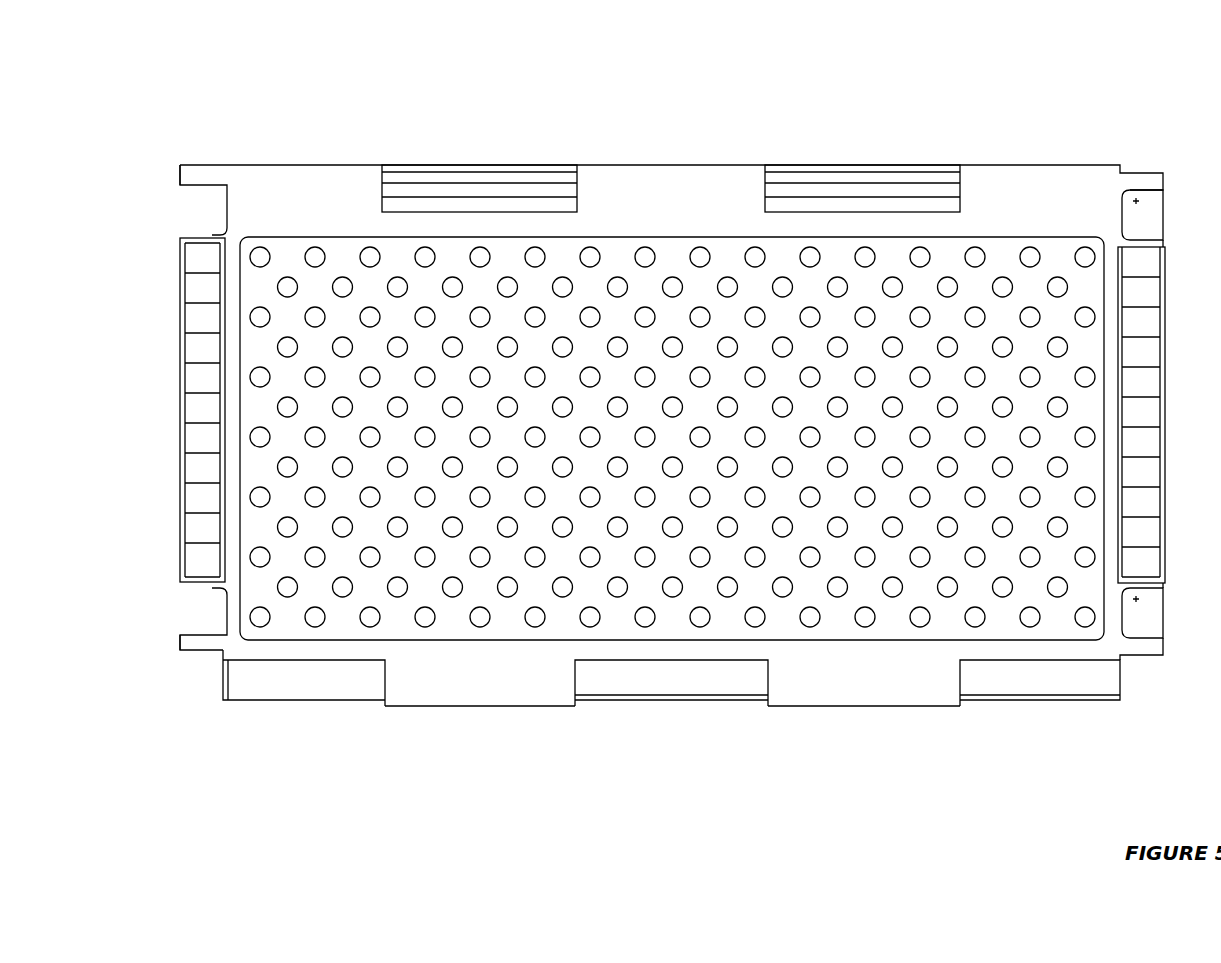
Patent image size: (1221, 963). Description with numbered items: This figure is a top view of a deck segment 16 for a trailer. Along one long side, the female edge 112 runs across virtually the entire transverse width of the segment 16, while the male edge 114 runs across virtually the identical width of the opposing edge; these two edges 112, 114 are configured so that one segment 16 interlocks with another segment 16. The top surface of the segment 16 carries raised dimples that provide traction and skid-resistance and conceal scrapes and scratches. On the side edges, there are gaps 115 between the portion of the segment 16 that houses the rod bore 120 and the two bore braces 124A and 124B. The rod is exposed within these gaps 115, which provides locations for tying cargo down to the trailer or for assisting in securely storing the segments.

The deck segment 16 is at (1137, 100).
The female edge 112 is at (182, 732).
The male edge 114 is at (1160, 143).
The gaps 115 is at (1170, 240).
The rod bore 120 is at (201, 448).
The bore brace 124A is at (174, 644).
The bore brace 124B is at (180, 169).